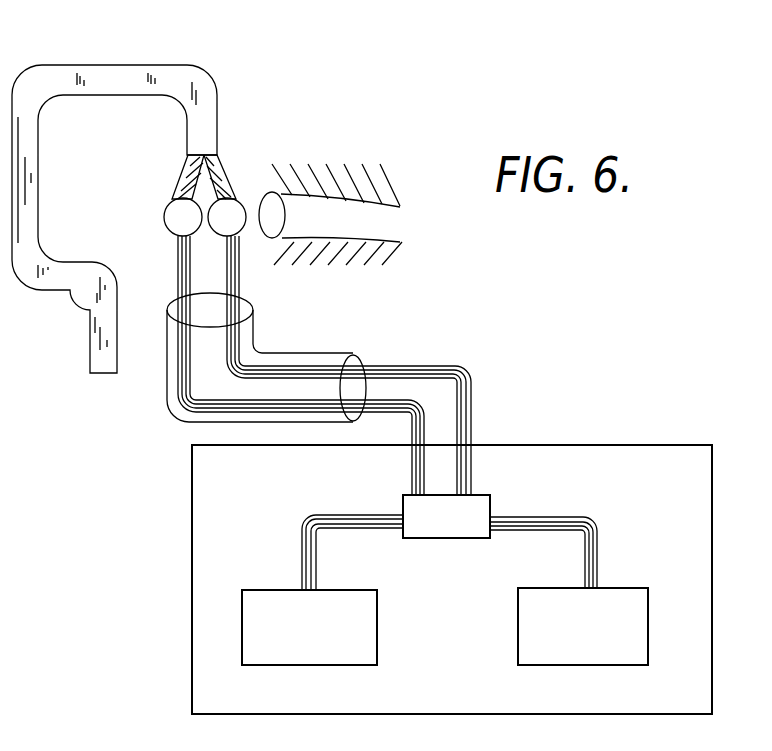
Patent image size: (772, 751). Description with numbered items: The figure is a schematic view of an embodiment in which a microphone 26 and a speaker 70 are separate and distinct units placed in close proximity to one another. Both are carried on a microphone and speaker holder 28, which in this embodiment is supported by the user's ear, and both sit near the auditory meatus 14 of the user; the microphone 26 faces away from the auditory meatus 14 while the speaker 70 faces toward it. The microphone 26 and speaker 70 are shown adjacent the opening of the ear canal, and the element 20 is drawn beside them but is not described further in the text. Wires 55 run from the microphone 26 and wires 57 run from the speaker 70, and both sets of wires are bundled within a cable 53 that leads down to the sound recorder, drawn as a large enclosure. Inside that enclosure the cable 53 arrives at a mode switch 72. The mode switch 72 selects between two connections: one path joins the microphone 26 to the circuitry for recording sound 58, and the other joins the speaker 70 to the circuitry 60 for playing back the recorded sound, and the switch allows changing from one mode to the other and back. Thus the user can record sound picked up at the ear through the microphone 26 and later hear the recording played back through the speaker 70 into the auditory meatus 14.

The microphone and speaker holder 28 is at (50, 73).
The microphone 26 is at (171, 204).
The speaker 70 is at (226, 199).
The auditory meatus 14 is at (400, 208).
The transducer assembly 20 is at (265, 271).
The wires 55 is at (187, 360).
The wires 57 is at (231, 349).
The cable 53 is at (290, 357).
The mode switch 72 is at (480, 503).
The circuitry for recording sound 58 is at (251, 594).
The circuitry for playing back the recorded sound 60 is at (628, 598).